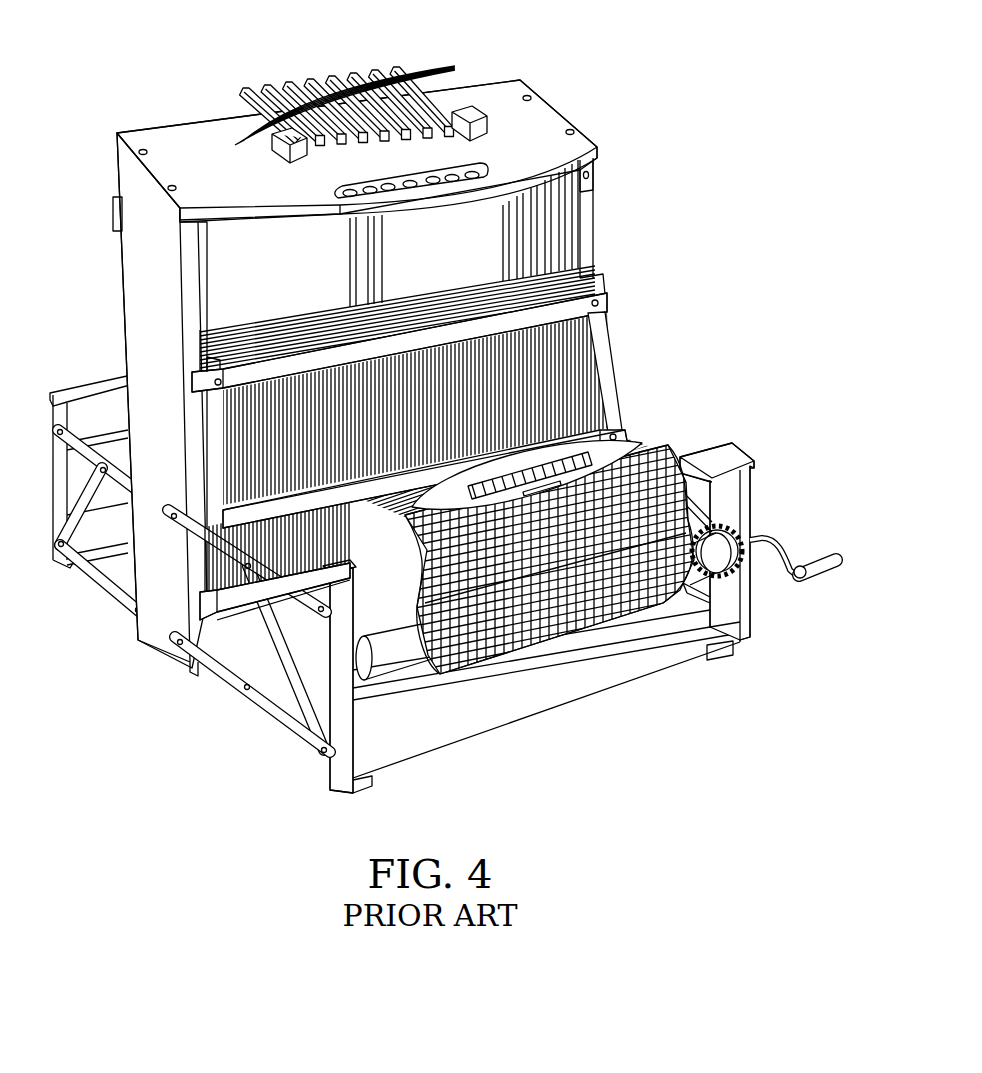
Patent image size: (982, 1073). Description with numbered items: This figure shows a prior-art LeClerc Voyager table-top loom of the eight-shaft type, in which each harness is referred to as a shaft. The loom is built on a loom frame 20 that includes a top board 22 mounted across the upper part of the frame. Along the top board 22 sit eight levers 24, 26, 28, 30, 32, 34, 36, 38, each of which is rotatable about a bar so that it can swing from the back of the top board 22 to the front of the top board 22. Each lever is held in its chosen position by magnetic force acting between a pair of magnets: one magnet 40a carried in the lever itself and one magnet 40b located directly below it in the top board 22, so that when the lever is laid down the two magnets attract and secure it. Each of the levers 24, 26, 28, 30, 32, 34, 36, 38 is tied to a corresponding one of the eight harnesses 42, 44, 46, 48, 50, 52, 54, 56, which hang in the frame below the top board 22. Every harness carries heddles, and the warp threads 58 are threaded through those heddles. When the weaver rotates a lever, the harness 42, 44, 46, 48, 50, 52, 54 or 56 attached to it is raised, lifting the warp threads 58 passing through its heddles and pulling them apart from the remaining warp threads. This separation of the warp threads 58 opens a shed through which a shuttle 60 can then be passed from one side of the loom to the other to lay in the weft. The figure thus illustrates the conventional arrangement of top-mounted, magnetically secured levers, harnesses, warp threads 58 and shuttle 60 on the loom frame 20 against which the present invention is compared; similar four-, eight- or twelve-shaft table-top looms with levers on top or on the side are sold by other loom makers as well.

The loom frame 20 is at (65, 585).
The top board 22 is at (583, 138).
The lever 24 is at (252, 95).
The lever 26 is at (267, 84).
The lever 28 is at (288, 80).
The lever 30 is at (311, 78).
The lever 32 is at (334, 78).
The lever 34 is at (355, 73).
The lever 36 is at (378, 68).
The lever 38 is at (396, 72).
The magnet 40a is at (357, 118).
The magnet 40b is at (336, 193).
The harness 42 is at (220, 328).
The harness 44 is at (257, 320).
The harness 46 is at (290, 324).
The harness 48 is at (323, 316).
The harness 50 is at (400, 302).
The harness 52 is at (425, 296).
The harness 54 is at (460, 300).
The harness 56 is at (488, 291).
The warp threads 58 is at (587, 414).
The shuttle 60 is at (636, 432).